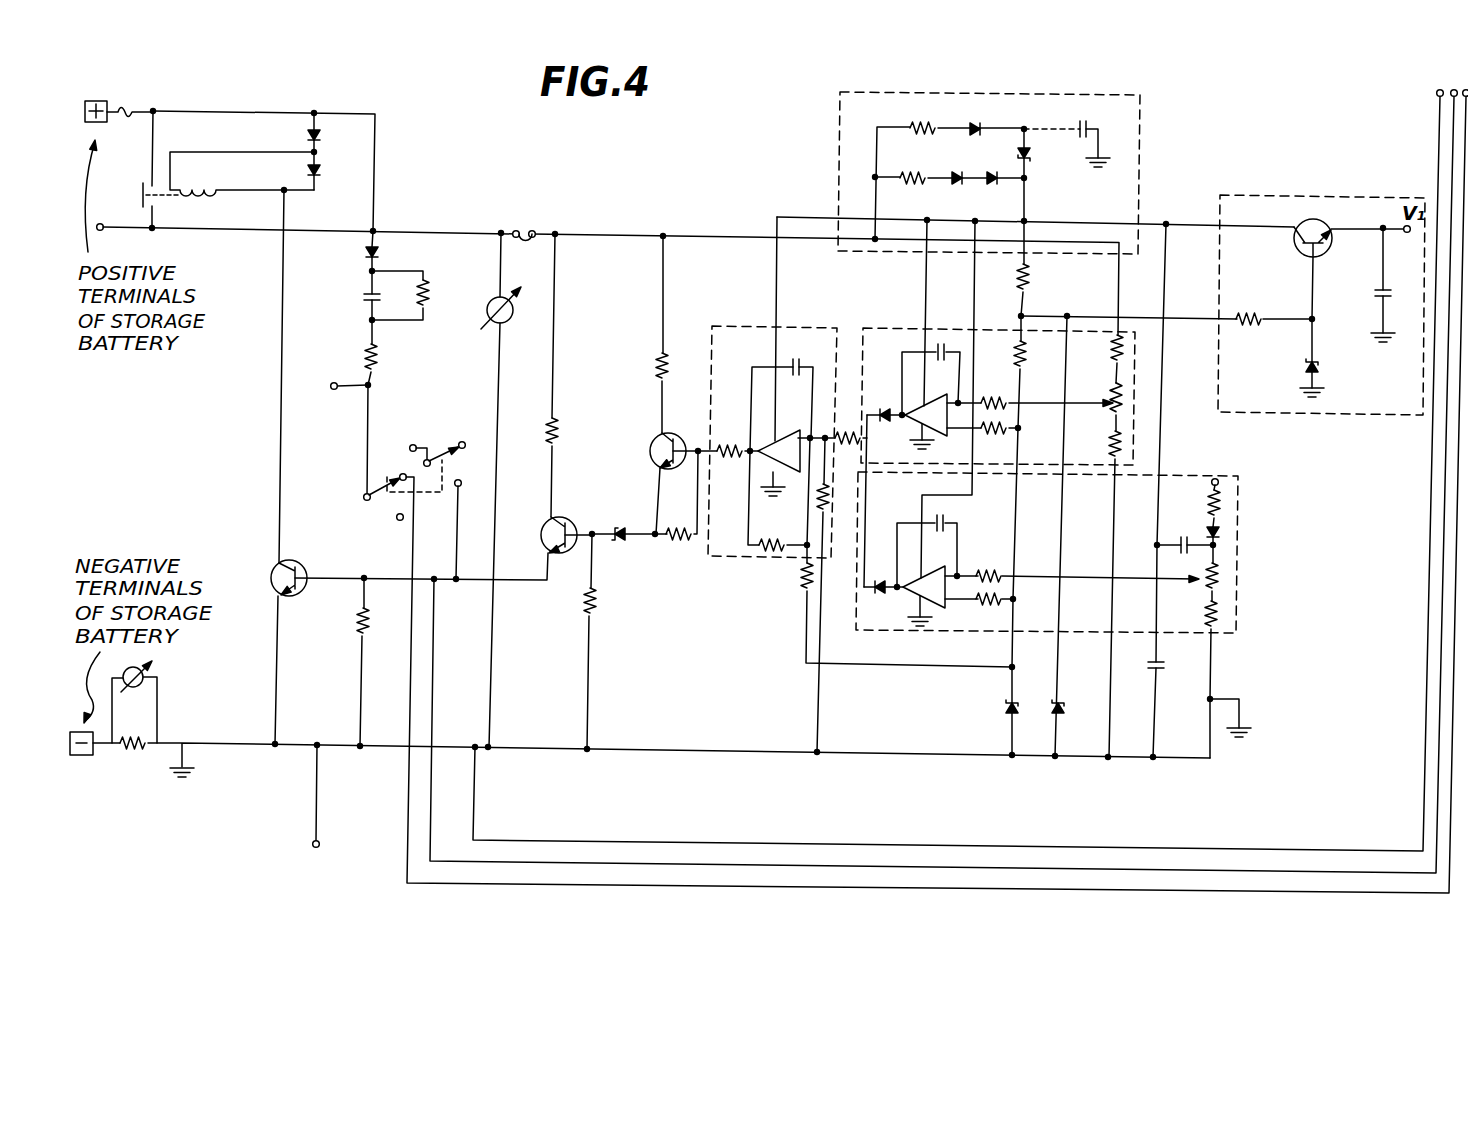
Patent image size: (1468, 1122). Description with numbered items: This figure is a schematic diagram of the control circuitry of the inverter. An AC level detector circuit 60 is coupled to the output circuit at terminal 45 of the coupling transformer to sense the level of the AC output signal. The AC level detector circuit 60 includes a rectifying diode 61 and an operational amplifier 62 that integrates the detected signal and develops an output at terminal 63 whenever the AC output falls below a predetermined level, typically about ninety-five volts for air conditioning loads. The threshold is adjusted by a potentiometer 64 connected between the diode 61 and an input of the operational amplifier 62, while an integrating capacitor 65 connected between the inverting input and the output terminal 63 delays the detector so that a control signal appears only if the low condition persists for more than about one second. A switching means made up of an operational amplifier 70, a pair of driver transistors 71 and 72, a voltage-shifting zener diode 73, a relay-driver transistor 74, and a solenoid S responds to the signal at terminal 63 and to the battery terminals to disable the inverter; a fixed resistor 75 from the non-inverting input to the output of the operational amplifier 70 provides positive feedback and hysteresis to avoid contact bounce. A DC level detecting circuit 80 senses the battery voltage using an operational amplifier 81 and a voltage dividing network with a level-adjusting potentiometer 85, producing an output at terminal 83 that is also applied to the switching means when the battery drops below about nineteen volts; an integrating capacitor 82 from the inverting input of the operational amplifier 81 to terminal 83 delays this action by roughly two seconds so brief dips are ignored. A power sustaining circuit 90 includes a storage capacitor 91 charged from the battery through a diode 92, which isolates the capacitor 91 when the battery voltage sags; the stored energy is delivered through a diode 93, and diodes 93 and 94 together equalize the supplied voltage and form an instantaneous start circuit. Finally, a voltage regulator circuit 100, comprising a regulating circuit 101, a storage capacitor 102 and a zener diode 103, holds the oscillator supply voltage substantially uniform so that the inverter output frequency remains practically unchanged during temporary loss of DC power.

The solenoid S is at (197, 216).
The terminal 45 is at (1219, 479).
The AC level detector circuit 60 is at (1240, 560).
The diode 61 is at (1206, 532).
The operational amplifier 62 is at (938, 570).
The output terminal 63 is at (895, 584).
The potentiometer 64 is at (1203, 583).
The integrating capacitor 65 is at (943, 521).
The operational amplifier 70 is at (792, 431).
The driver transistor 71 is at (648, 452).
The driver transistor 72 is at (558, 517).
The voltage-shifting zener diode 73 is at (623, 522).
The relay-driver transistor 74 is at (290, 598).
The fixed resistor 75 is at (764, 543).
The DC level detecting circuit 80 is at (885, 327).
The operational amplifier 81 is at (932, 400).
The integrating capacitor 82 is at (947, 348).
The output terminal 83 is at (897, 412).
The level-adjusting potentiometer 85 is at (1099, 402).
The power sustaining circuit 90 is at (840, 137).
The storage capacitor 91 is at (1079, 126).
The diode 92 is at (976, 124).
The diode 93 is at (1029, 152).
The diode 94 is at (992, 185).
The voltage regulator circuit 100 is at (1308, 414).
The regulating circuit 101 is at (1296, 223).
The storage capacitor 102 is at (1380, 290).
The zener diode 103 is at (1322, 364).